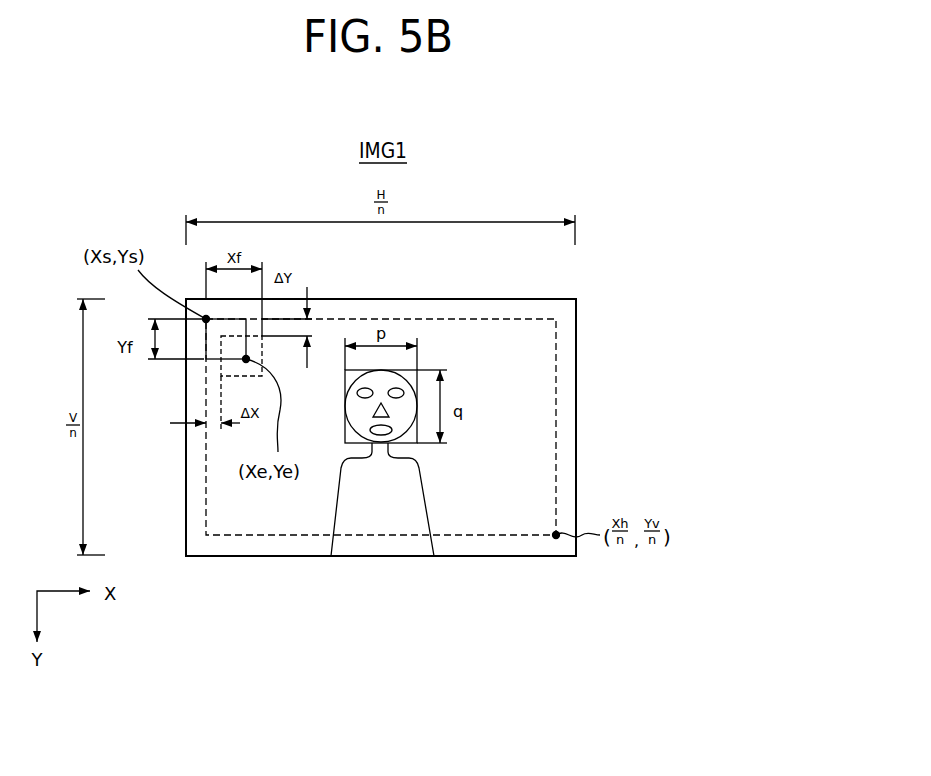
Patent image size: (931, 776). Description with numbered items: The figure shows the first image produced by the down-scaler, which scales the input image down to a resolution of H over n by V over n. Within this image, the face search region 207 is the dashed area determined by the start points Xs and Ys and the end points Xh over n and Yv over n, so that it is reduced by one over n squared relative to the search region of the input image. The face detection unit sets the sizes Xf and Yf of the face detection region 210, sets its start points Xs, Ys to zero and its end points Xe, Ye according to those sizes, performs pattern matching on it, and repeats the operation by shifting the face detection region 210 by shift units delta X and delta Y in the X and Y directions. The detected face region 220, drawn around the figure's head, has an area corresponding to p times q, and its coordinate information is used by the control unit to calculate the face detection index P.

The face search region 207 is at (556, 447).
The face detection region 210 is at (233, 362).
The face region 220 is at (345, 383).